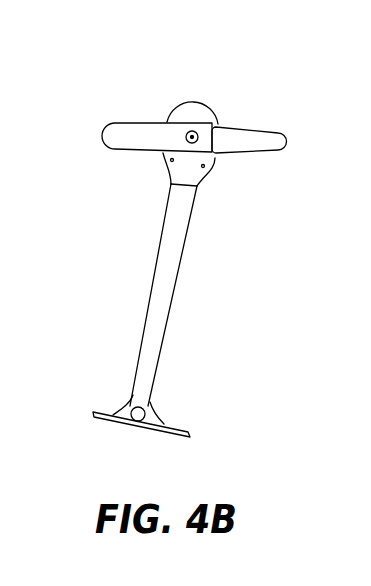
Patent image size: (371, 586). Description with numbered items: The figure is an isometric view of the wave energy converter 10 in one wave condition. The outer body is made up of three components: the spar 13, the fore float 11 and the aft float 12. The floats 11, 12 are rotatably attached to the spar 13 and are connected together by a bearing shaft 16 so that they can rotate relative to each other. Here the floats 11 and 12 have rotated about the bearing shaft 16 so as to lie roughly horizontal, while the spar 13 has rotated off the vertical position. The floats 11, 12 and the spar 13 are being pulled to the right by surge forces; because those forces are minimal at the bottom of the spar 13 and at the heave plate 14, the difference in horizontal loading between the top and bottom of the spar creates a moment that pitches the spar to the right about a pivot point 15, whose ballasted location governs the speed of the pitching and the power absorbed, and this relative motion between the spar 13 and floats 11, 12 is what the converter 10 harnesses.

The wave energy converter 10 is at (210, 92).
The fore float 11 is at (118, 123).
The aft float 12 is at (267, 130).
The spar 13 is at (175, 288).
The heave plate 14 is at (181, 431).
The pivot point 15 is at (131, 386).
The bearing shaft 16 is at (191, 131).